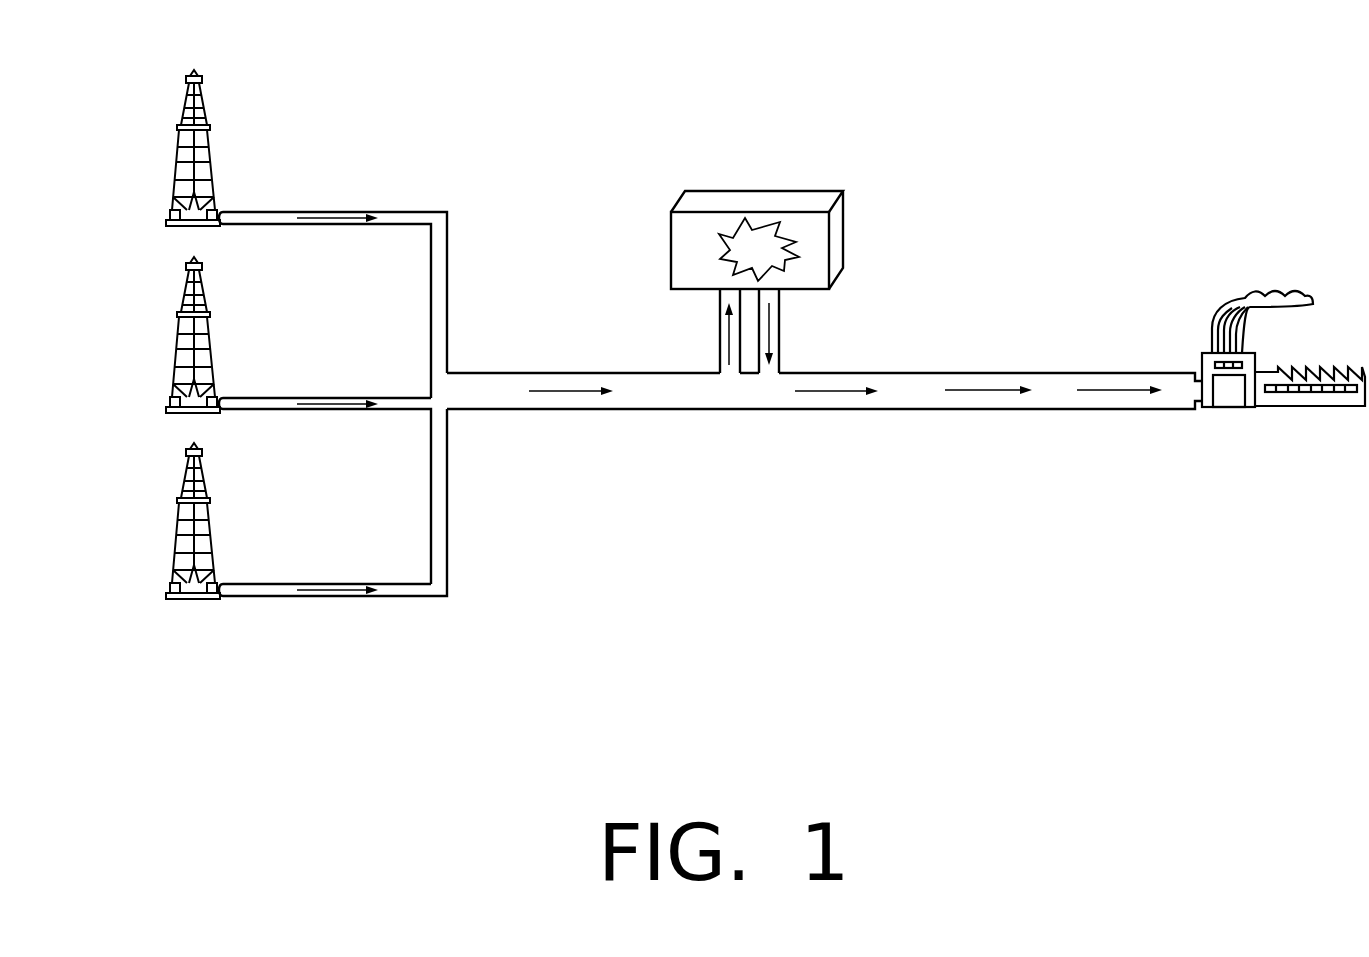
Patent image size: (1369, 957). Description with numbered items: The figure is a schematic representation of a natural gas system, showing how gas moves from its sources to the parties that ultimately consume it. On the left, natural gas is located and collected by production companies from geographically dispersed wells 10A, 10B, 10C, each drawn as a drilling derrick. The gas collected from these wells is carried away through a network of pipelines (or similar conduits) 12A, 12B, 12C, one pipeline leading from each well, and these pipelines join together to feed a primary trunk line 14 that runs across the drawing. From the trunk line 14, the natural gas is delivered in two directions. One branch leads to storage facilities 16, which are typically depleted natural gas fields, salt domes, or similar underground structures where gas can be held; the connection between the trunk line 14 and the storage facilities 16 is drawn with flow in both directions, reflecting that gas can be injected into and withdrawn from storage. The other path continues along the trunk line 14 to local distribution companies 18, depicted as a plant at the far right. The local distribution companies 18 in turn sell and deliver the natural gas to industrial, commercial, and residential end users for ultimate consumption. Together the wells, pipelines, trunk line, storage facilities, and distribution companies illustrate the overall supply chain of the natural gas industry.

The well 10A is at (185, 92).
The well 10B is at (187, 271).
The well 10C is at (183, 463).
The pipeline 12A is at (356, 224).
The pipeline 12B is at (355, 409).
The pipeline 12C is at (315, 597).
The primary trunk line 14 is at (621, 409).
The storage facilities 16 is at (679, 258).
The local distribution companies 18 is at (1227, 408).